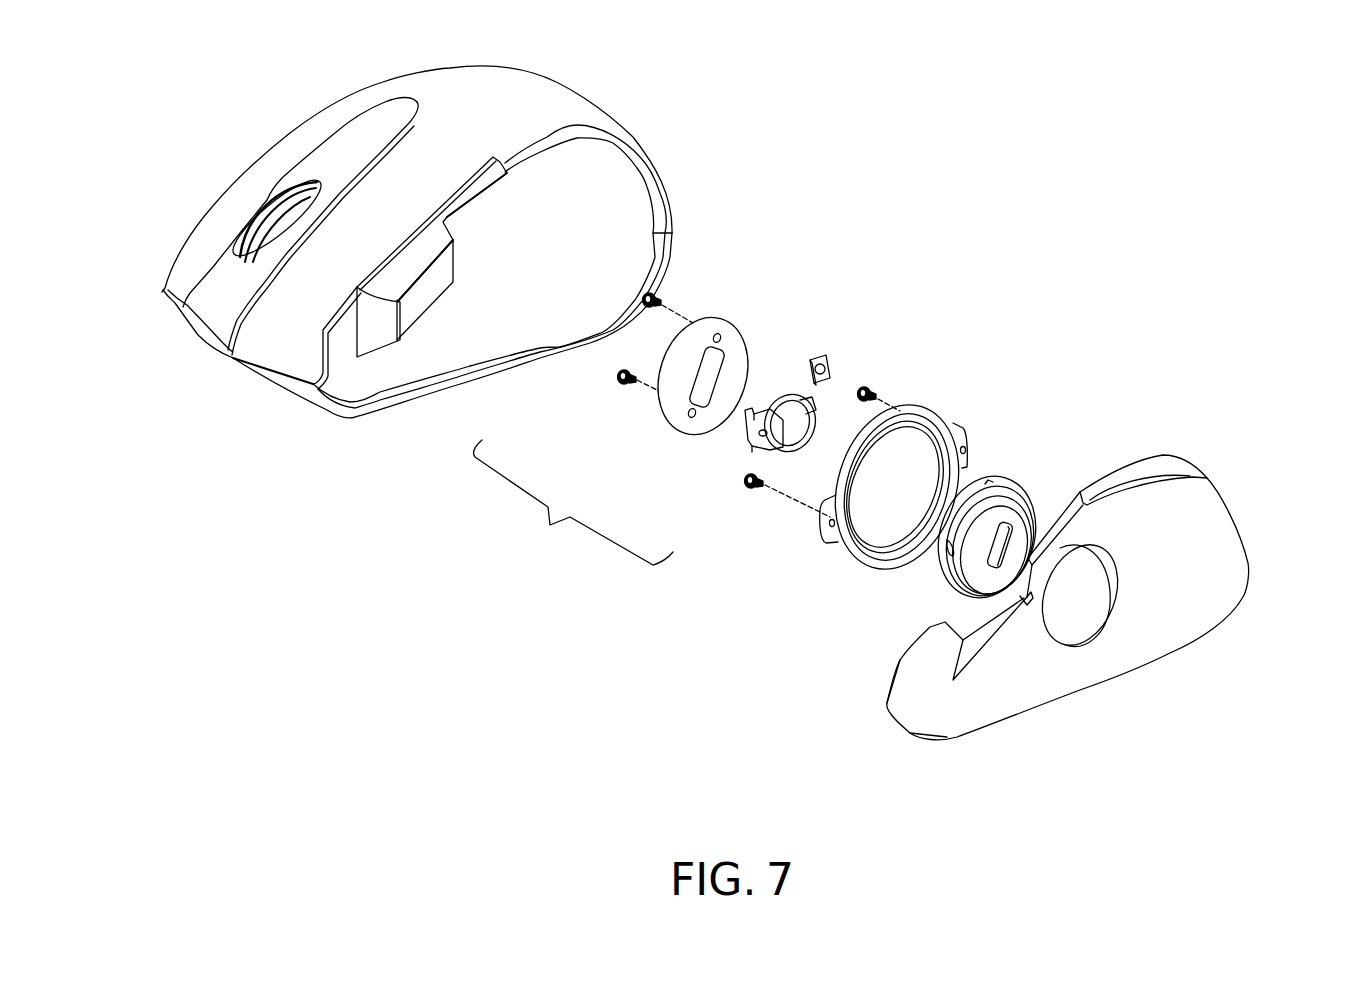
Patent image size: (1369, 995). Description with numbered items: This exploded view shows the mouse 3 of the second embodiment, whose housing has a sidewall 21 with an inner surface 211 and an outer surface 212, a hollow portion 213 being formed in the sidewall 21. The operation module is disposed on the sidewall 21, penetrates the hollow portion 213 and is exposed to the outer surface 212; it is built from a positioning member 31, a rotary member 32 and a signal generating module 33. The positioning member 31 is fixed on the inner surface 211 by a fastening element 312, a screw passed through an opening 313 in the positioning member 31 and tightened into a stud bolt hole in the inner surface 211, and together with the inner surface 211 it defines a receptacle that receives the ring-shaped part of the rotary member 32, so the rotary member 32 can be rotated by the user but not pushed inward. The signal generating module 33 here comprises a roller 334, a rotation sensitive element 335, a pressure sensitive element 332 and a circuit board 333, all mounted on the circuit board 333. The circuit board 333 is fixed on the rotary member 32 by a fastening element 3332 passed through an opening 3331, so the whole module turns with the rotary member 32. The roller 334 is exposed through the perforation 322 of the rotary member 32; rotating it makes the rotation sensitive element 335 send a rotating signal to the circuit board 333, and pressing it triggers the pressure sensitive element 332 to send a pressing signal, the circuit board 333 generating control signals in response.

The mouse 3 is at (1099, 133).
The sidewall 21 is at (1088, 597).
The inner surface 211 is at (947, 617).
The outer surface 212 is at (1213, 537).
The hollow portion 213 is at (1088, 628).
The positioning member 31 is at (957, 398).
The fastening element 312 is at (751, 490).
The opening 313 is at (968, 447).
The rotary member 32 is at (995, 470).
The perforation 322 is at (1000, 540).
The signal generating module 33 is at (573, 502).
The pressure sensitive element 332 is at (833, 360).
The circuit board 333 is at (675, 400).
The opening 3331 is at (720, 334).
The fastening element 3332 is at (658, 291).
The roller 334 is at (780, 395).
The rotation sensitive element 335 is at (745, 432).